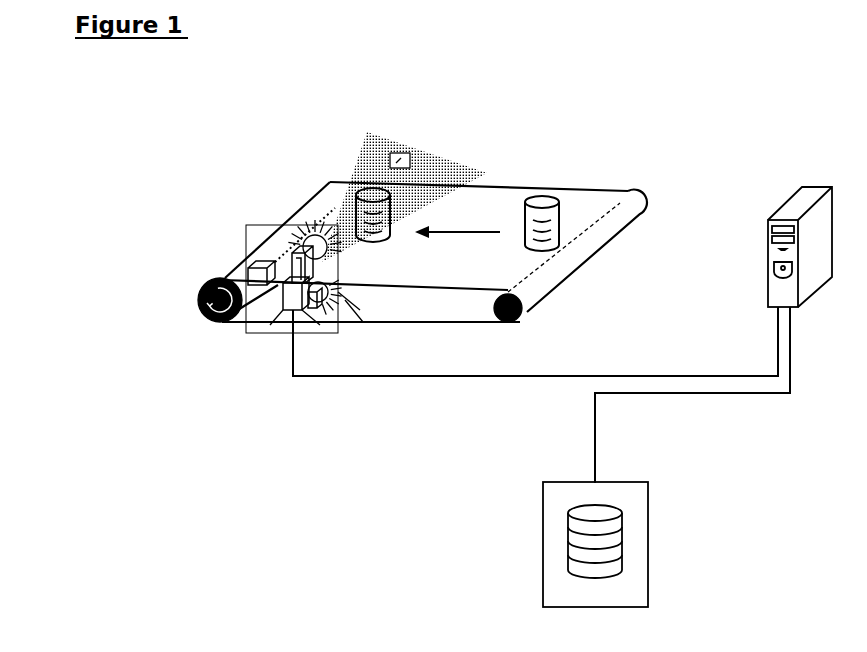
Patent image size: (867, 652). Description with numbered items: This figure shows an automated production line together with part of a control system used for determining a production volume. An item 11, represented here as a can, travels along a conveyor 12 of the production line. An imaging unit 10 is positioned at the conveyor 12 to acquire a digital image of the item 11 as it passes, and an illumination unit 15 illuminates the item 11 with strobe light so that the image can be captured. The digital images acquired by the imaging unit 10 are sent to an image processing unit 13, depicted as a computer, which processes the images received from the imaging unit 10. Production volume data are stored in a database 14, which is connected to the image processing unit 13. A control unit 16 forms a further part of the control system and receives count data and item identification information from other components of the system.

The imaging unit 10 is at (317, 308).
The item 11 is at (554, 223).
The conveyor 12 is at (236, 267).
The image processing unit 13 is at (794, 247).
The database 14 is at (595, 544).
The illumination unit 15 is at (340, 288).
The control unit 16 is at (287, 307).